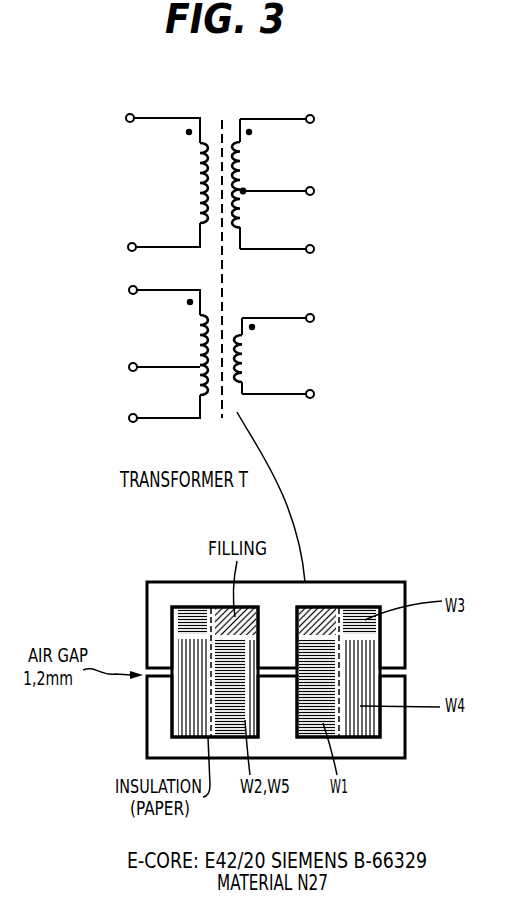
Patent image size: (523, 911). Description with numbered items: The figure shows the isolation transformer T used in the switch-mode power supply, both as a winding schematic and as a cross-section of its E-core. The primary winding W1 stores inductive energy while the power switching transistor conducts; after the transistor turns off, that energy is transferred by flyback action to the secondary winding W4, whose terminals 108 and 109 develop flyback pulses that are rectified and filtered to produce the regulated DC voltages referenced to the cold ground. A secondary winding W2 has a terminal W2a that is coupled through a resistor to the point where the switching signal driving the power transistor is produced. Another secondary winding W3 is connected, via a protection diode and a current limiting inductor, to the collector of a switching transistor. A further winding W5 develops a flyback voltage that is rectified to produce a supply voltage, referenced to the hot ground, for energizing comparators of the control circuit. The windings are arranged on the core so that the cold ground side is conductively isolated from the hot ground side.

The terminal 108 is at (312, 115).
The terminal 109 is at (311, 196).
The primary winding W1 is at (115, 182).
The secondary winding W2 is at (200, 388).
The terminal W2a is at (130, 421).
The secondary winding W3 is at (353, 356).
The secondary winding W4 is at (355, 167).
The winding W5 is at (198, 318).